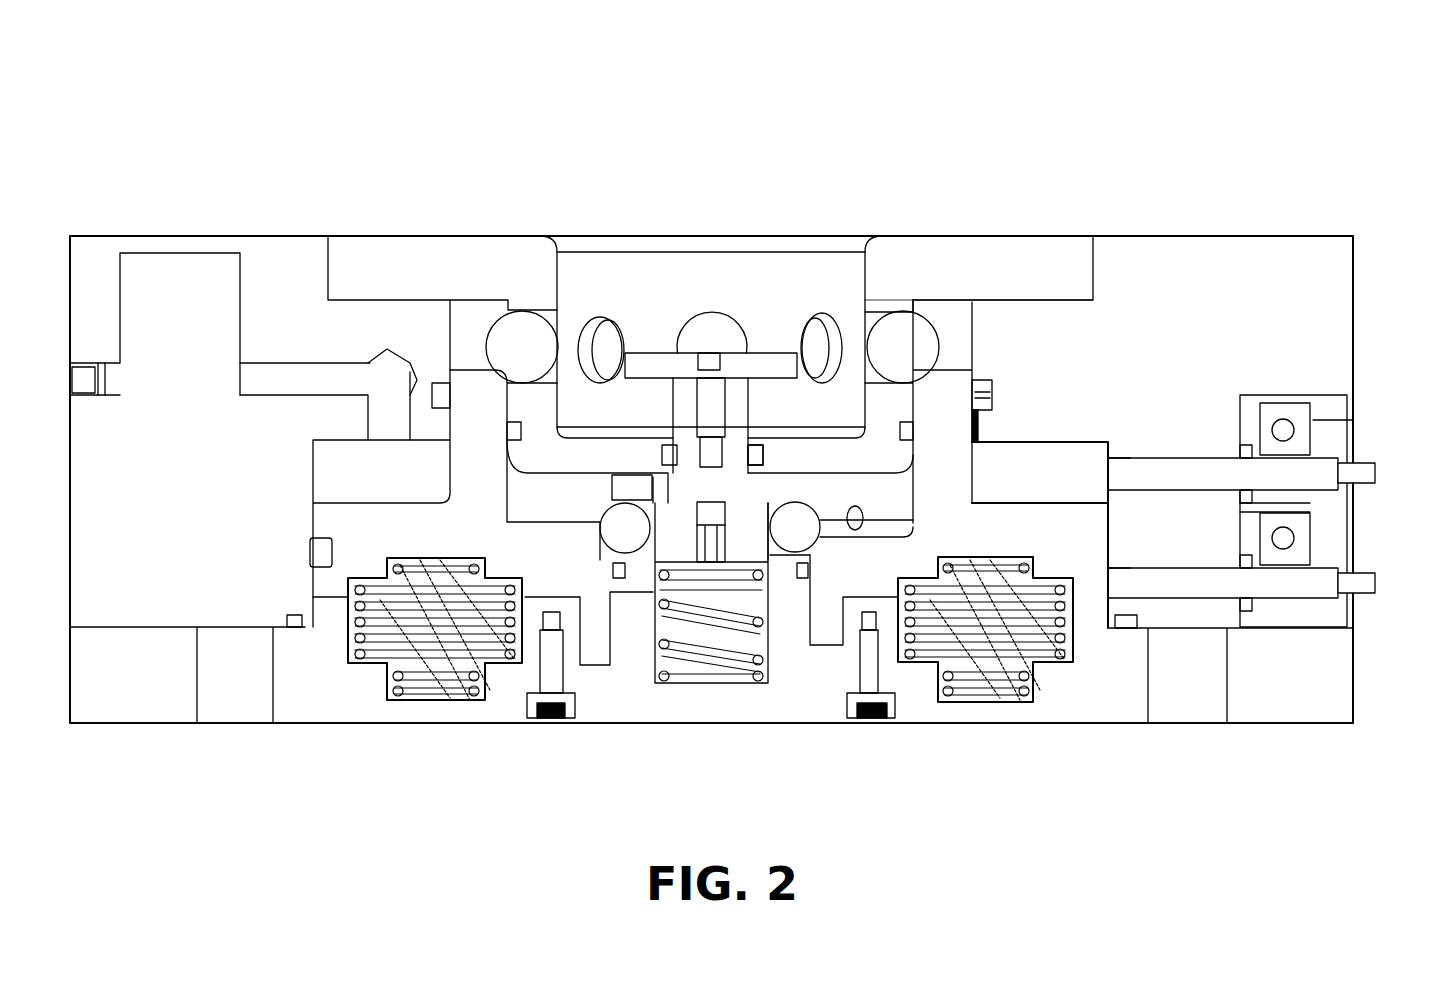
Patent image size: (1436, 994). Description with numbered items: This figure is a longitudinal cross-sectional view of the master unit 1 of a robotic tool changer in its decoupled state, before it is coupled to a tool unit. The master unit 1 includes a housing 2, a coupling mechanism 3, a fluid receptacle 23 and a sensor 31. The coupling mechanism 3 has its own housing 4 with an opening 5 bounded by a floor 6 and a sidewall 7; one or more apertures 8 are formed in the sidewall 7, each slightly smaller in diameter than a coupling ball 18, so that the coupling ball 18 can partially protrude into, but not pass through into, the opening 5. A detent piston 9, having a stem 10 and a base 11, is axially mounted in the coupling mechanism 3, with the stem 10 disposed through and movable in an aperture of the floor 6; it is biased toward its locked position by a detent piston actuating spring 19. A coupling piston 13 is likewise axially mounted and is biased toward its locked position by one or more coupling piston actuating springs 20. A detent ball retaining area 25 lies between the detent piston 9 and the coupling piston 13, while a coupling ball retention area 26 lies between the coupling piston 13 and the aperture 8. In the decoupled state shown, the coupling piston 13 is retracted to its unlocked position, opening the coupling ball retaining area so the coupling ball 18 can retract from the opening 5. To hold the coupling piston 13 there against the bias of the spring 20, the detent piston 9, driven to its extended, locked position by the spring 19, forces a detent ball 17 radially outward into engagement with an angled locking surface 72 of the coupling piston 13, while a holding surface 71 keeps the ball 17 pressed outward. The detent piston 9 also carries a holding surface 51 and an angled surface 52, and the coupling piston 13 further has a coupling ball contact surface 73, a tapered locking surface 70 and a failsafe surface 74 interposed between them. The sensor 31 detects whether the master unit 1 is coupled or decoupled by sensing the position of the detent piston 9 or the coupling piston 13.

The master unit 1 is at (306, 92).
The housing 2 is at (1272, 265).
The coupling mechanism 3 is at (768, 186).
The housing 4 is at (418, 258).
The opening 5 is at (647, 270).
The floor 6 is at (777, 437).
The sidewall 7 is at (877, 303).
The aperture 8 is at (821, 338).
The detent piston 9 is at (680, 527).
The stem 10 is at (735, 422).
The base 11 is at (640, 360).
The coupling piston 13 is at (367, 545).
The detent ball 17 is at (620, 523).
The coupling ball 18 is at (955, 305).
The detent piston actuating spring 19 is at (712, 612).
The coupling piston actuating spring 20 is at (445, 632).
The fluid receptacle 23 is at (177, 272).
The detent ball retaining area 25 is at (782, 562).
The coupling ball retention area 26 is at (903, 342).
The sensor 31 is at (1372, 527).
The holding surface 51 is at (767, 543).
The angled surface 52 is at (757, 488).
The tapered locking surface 70 is at (917, 402).
The holding surface 71 is at (812, 590).
The angled locking surface 72 is at (813, 545).
The coupling ball contact surface 73 is at (918, 387).
The failsafe surface 74 is at (920, 372).